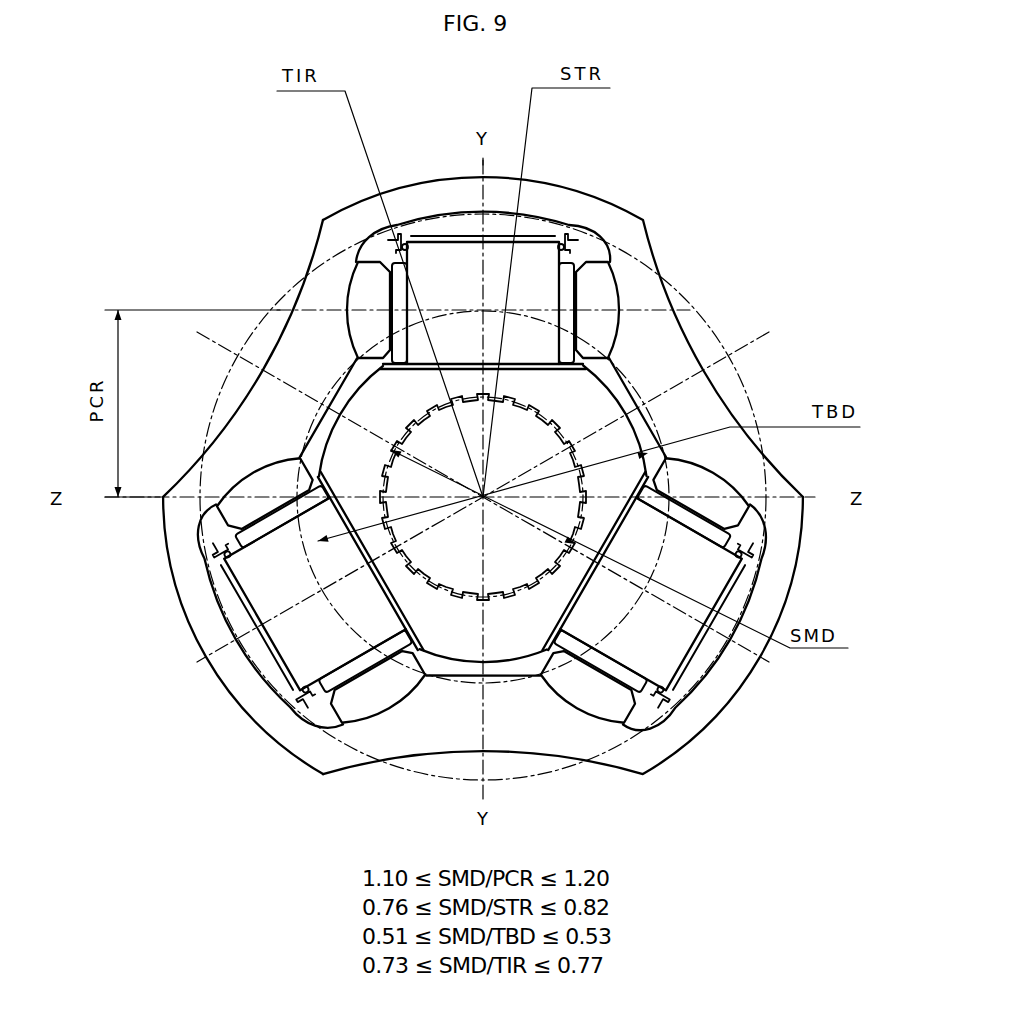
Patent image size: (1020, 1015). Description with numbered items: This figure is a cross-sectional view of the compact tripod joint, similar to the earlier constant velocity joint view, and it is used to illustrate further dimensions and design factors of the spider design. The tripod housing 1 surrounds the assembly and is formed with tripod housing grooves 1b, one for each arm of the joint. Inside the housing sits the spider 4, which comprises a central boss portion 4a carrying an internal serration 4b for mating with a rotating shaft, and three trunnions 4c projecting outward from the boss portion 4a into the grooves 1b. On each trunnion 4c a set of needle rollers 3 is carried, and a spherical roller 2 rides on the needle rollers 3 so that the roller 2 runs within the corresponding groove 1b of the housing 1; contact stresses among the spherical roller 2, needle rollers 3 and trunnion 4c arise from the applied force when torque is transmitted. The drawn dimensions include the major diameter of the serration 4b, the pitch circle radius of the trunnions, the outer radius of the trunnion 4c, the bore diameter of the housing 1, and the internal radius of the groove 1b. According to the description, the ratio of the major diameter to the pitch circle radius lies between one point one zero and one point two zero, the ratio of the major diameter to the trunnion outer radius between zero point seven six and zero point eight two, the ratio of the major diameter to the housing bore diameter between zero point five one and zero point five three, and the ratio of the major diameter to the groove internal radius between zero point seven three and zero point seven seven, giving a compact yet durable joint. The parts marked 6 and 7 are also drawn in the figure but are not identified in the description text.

The tripod housing 1 is at (553, 202).
The tripod housing groove 1b is at (612, 255).
The spherical roller 2 is at (600, 310).
The needle rollers 3 is at (597, 228).
The spider 4 is at (472, 252).
The boss portion 4a is at (590, 407).
The internal serration 4b is at (637, 412).
The trunnion 4c is at (425, 297).
The needle rollers 6 is at (405, 228).
The retaining ring 7 is at (327, 217).